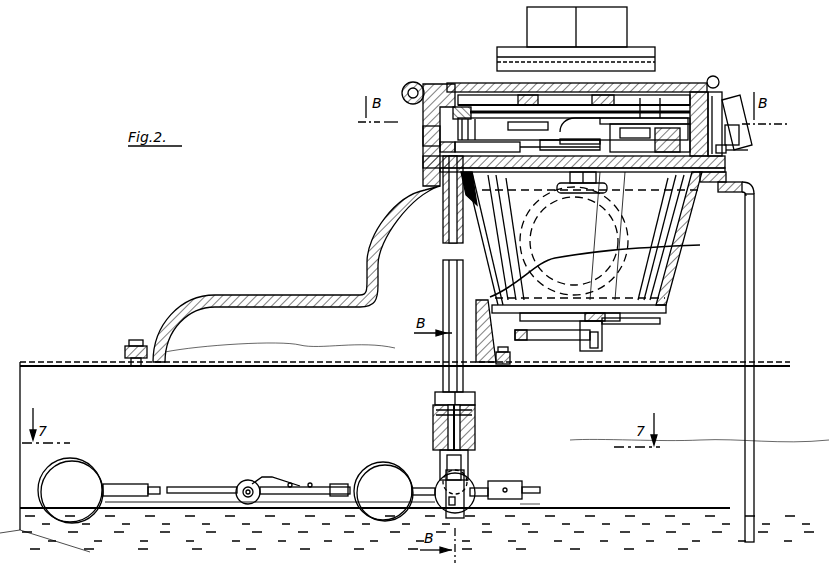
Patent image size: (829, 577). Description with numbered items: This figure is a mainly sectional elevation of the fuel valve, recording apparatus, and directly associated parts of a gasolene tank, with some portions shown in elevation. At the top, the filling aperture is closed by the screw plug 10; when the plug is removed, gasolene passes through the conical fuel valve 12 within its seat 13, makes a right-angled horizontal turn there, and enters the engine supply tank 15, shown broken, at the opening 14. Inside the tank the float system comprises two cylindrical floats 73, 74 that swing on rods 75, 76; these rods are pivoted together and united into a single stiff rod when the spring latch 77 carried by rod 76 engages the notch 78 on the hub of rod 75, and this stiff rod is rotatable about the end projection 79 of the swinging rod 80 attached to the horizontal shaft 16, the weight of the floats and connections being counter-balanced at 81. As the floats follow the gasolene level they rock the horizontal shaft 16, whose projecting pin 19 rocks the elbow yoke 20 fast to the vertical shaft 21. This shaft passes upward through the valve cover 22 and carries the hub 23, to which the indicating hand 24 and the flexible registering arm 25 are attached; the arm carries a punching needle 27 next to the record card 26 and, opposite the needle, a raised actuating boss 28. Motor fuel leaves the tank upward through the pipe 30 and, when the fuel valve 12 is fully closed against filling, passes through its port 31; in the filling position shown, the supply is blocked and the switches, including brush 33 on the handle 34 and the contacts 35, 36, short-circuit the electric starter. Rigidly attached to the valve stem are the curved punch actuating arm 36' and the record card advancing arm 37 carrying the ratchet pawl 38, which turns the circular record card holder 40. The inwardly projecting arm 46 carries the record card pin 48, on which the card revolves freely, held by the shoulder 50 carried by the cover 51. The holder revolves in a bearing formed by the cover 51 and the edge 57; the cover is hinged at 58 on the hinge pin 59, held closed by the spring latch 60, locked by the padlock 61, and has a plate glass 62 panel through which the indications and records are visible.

The screw plug 10 is at (576, 39).
The conical fuel valve 12 is at (622, 236).
The seat 13 is at (688, 222).
The opening 14 is at (395, 447).
The engine supply tank 15 is at (424, 468).
The horizontal shaft 16 is at (468, 472).
The projecting pin 19 is at (462, 510).
The elbow yoke 20 is at (486, 484).
The vertical shaft 21 is at (443, 214).
The valve cover 22 is at (425, 164).
The hub 23 is at (455, 147).
The indicating hand 24 is at (490, 130).
The registering arm 25 is at (500, 118).
The record card 26 is at (690, 100).
The punching needle 27 is at (640, 112).
The actuating boss 28 is at (600, 182).
The pipe 30 is at (752, 230).
The port 31 is at (590, 194).
The brush 33 is at (536, 322).
The handle 34 is at (548, 340).
The contact 35 is at (603, 330).
The contact 36 is at (642, 321).
The punch actuating arm 36' is at (574, 241).
The record card advancing arm 37 is at (700, 200).
The ratchet pawl 38 is at (712, 76).
The record card holder 40 is at (732, 100).
The inwardly projecting arm 46 is at (573, 134).
The record card pin 48 is at (620, 115).
The shoulder 50 is at (600, 96).
The cover 51 is at (436, 84).
The valve cover edge 57 is at (423, 128).
The hinge 58 is at (404, 86).
The hinge pin 59 is at (402, 94).
The spring latch 60 is at (720, 80).
The padlock 61 is at (740, 149).
The plate glass 62 is at (493, 83).
The cylindrical float 73 is at (99, 490).
The cylindrical float 74 is at (394, 491).
The rod 75 is at (202, 487).
The rod 76 is at (332, 486).
The spring latch 77 is at (272, 477).
The notch 78 is at (248, 480).
The end projection 79 is at (258, 501).
The swinging rod 80 is at (436, 488).
The counter-balance 81 is at (520, 504).